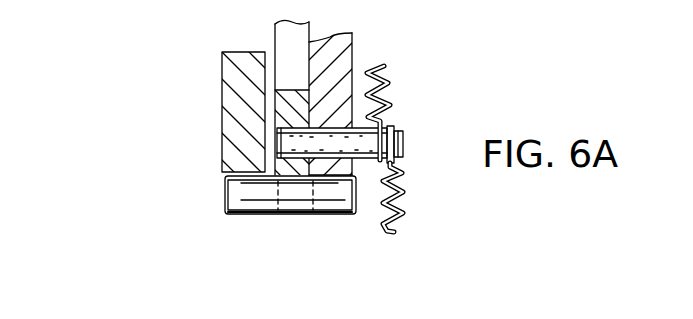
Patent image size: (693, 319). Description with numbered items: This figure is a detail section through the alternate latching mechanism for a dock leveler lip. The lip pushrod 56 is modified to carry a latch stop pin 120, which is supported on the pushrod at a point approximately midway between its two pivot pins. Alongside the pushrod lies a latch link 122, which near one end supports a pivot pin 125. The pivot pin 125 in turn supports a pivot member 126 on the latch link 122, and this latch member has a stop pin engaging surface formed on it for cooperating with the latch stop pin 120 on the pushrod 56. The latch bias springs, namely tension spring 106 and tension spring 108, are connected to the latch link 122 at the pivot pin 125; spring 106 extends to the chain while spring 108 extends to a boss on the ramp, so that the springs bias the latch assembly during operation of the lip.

The pushrod link 56 is at (222, 97).
The tension spring 106 is at (408, 214).
The tension spring 108 is at (392, 76).
The latch stop pin 120 is at (238, 217).
The latch link 122 is at (274, 43).
The pivot pin 125 is at (284, 142).
The pivot member 126 is at (351, 38).